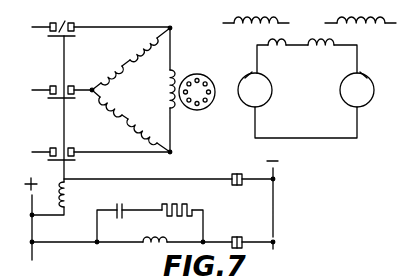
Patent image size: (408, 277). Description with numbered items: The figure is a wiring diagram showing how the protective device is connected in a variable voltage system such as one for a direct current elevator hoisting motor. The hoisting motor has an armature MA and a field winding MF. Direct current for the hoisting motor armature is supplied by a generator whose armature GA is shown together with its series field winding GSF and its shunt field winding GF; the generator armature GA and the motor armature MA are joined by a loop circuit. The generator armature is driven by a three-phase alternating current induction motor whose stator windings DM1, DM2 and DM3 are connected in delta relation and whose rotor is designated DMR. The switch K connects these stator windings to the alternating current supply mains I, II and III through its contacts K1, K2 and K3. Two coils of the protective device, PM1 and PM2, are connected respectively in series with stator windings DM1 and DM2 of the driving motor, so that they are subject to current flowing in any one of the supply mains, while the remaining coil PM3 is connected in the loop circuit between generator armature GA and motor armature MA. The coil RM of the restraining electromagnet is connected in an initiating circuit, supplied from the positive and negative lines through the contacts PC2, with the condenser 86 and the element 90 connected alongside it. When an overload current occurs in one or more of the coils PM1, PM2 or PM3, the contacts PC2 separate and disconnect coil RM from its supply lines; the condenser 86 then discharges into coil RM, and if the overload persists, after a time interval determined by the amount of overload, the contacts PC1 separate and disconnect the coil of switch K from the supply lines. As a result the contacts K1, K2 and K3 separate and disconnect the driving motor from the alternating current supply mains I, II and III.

The alternating current supply main I is at (25, 33).
The alternating current supply main II is at (30, 96).
The alternating current supply main III is at (35, 158).
The contact of switch K K1 is at (63, 21).
The contact of switch K K2 is at (63, 85).
The contact of switch K K3 is at (63, 148).
The switch K is at (68, 193).
The stator winding of driving motor DM1 is at (135, 49).
The stator winding of driving motor DM2 is at (138, 143).
The stator winding of driving motor DM3 is at (165, 91).
The coil of overload electromagnet PM1 is at (103, 70).
The coil of overload electromagnet PM2 is at (101, 112).
The coil of overload electromagnet PM3 is at (322, 56).
The rotor of driving motor DMR is at (197, 82).
The shunt field winding of generator GF is at (256, 11).
The field winding of hoisting motor MF is at (360, 11).
The series field winding of generator GSF is at (282, 56).
The generator armature GA is at (255, 89).
The hoisting motor armature MA is at (357, 89).
The contacts of protective device PC1 is at (233, 175).
The contacts of protective device PC2 is at (237, 237).
The condenser 86 is at (119, 205).
The resistor 90 is at (177, 204).
The coil of restraining electromagnet RM is at (149, 231).